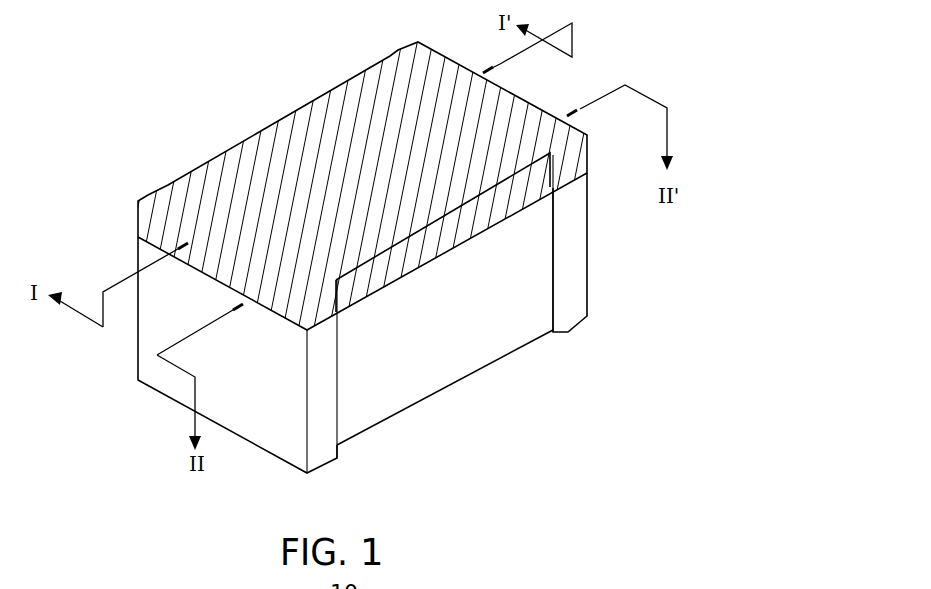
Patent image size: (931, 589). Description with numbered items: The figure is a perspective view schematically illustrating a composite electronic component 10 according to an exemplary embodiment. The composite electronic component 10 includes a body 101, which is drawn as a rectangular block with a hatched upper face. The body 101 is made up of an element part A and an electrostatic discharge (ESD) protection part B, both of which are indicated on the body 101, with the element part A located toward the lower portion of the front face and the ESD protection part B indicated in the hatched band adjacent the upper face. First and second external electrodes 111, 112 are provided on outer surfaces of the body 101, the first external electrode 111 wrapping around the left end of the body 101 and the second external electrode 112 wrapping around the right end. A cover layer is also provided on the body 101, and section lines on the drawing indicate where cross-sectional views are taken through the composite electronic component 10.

The composite electronic component 10 is at (252, 38).
The body 101 is at (483, 328).
The first external electrode 111 is at (322, 435).
The second external electrode 112 is at (573, 290).
The element part A is at (372, 390).
The electrostatic discharge (ESD) protection part B is at (397, 270).